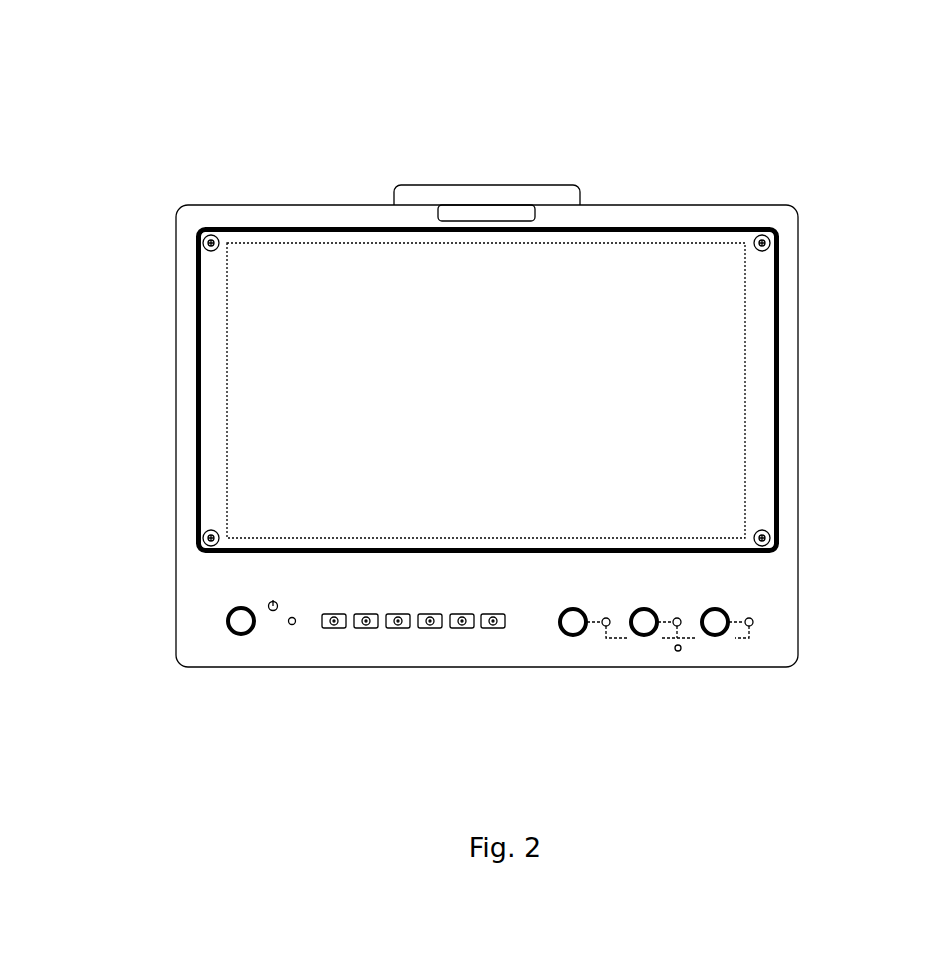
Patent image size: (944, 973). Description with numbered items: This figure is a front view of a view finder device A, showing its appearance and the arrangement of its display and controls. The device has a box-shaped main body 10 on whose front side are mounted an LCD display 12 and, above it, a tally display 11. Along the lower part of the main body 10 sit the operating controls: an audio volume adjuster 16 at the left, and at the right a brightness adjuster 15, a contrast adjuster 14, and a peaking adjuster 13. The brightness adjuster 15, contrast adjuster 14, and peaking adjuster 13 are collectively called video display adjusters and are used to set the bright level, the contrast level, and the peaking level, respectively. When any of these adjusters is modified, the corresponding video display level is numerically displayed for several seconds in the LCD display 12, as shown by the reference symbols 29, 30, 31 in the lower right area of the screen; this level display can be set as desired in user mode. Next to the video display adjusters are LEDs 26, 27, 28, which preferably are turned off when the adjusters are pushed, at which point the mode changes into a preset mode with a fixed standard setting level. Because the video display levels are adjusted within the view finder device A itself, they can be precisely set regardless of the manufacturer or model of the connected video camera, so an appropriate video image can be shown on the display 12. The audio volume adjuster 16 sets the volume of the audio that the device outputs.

The view finder device A is at (263, 145).
The main body 10 is at (175, 513).
The tally display 11 is at (496, 218).
The LCD display 12 is at (582, 320).
The peaking adjuster 13 is at (711, 642).
The contrast adjuster 14 is at (642, 642).
The brightness adjuster 15 is at (568, 642).
The audio volume adjuster 16 is at (238, 640).
The LED 26 is at (611, 617).
The LED 27 is at (682, 617).
The LED 28 is at (754, 617).
The video display level indication 29 is at (586, 470).
The video display level indication 30 is at (653, 470).
The video display level indication 31 is at (719, 470).